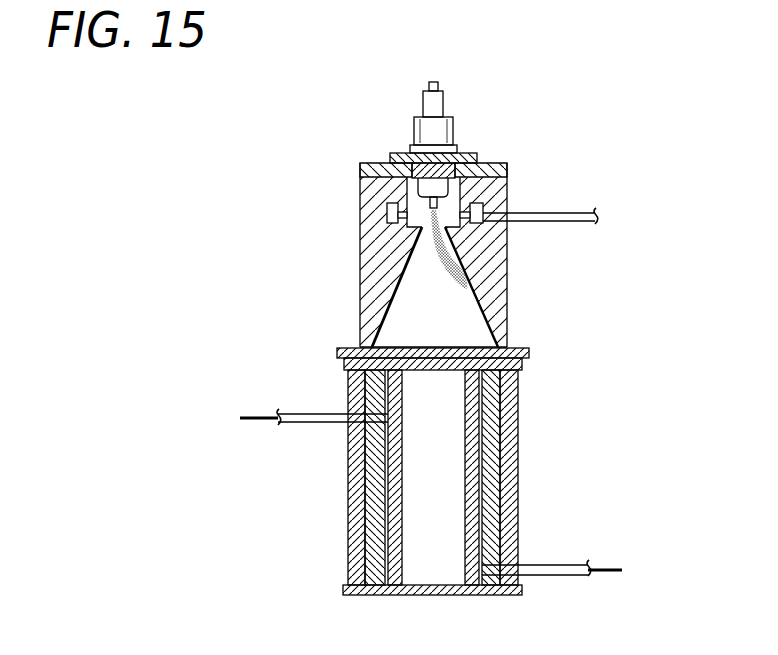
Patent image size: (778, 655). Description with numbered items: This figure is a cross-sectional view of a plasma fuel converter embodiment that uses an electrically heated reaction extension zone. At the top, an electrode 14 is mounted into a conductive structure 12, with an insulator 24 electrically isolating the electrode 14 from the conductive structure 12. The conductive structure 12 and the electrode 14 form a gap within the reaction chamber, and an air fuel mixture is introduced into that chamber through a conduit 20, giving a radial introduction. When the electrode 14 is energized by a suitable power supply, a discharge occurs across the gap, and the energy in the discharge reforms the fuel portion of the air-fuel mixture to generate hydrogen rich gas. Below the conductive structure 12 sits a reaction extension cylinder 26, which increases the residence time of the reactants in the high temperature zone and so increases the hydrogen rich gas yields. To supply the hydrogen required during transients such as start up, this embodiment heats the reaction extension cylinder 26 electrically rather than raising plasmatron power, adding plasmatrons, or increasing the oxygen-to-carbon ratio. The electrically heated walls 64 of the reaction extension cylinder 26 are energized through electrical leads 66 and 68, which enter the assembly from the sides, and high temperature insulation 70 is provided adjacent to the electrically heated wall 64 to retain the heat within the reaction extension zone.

The conductive structure 12 is at (375, 232).
The electrode 14 is at (453, 115).
The conduit 20 is at (550, 211).
The insulator 24 is at (453, 130).
The reaction extension cylinder 26 is at (426, 471).
The electrically heated walls 64 is at (466, 438).
The electrical lead 66 is at (260, 415).
The electrical lead 68 is at (610, 567).
The high temperature insulation 70 is at (517, 453).